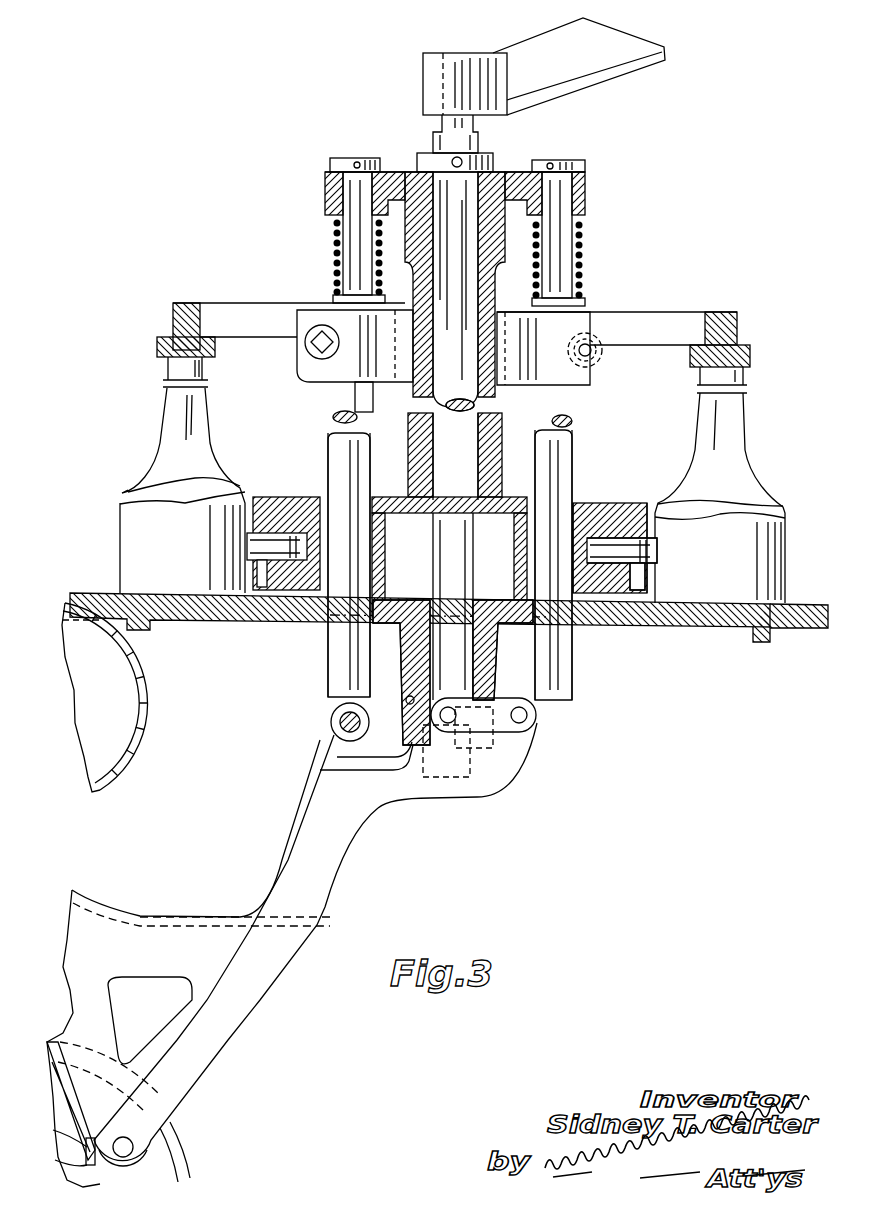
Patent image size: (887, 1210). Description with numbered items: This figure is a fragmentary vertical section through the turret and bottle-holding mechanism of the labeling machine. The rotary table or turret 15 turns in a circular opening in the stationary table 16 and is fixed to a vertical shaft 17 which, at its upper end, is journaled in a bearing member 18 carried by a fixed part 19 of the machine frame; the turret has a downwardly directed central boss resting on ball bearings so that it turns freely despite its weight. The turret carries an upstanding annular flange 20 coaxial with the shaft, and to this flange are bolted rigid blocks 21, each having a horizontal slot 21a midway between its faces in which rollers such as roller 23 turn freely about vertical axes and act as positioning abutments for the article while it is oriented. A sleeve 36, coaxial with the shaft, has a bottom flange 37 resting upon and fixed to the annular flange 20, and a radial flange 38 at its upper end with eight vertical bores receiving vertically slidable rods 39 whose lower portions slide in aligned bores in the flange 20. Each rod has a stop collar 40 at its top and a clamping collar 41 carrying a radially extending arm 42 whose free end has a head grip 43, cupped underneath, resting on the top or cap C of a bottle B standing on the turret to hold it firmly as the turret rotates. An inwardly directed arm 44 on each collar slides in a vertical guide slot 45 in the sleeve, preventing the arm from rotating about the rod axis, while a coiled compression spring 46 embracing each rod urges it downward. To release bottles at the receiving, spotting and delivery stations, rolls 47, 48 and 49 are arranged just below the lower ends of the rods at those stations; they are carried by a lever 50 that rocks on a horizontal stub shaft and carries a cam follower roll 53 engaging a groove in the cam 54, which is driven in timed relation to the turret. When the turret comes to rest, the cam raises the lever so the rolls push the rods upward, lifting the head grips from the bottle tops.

The rotary table or turret 15 is at (232, 618).
The stationary table 16 is at (815, 630).
The vertical shaft 17 is at (440, 565).
The bearing member 18 is at (423, 83).
The fixed part of the machine frame 19 is at (522, 50).
The annular flange 20 is at (580, 503).
The rigid block 21 is at (610, 522).
The horizontal slot 21a is at (640, 556).
The roller 23 is at (262, 498).
The sleeve 36 is at (500, 235).
The bottom flange 37 is at (545, 470).
The radial flange 38 is at (585, 188).
The vertically slidable rod 39 is at (345, 188).
The stop collar 40 is at (338, 162).
The clamping collar 41 is at (345, 372).
The radially extending arm 42 is at (240, 330).
The head grip 43 is at (157, 347).
The inwardly directed arm 44 is at (337, 410).
The vertical guide slot 45 is at (335, 445).
The coiled compression spring 46 is at (333, 238).
The roll 47 is at (415, 702).
The roll 48 is at (540, 697).
The roll 49 is at (331, 722).
The lever 50 is at (490, 790).
The cam follower roll 53 is at (165, 1152).
The cam 54 is at (172, 1135).
The bottle B is at (120, 515).
The top or cap of a bottle C is at (165, 368).